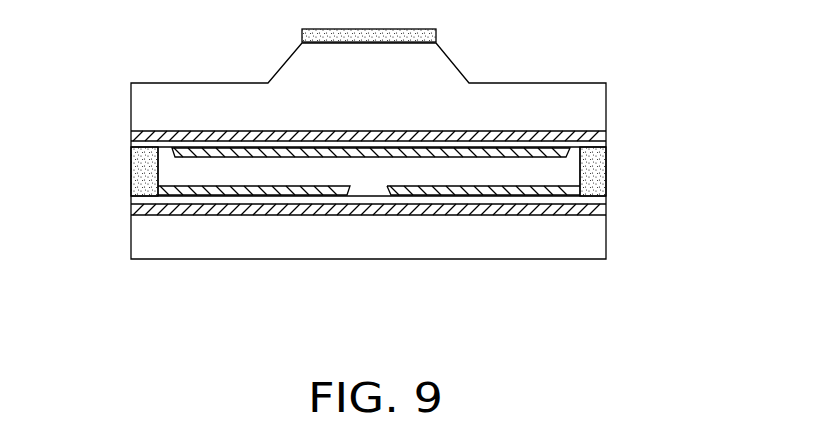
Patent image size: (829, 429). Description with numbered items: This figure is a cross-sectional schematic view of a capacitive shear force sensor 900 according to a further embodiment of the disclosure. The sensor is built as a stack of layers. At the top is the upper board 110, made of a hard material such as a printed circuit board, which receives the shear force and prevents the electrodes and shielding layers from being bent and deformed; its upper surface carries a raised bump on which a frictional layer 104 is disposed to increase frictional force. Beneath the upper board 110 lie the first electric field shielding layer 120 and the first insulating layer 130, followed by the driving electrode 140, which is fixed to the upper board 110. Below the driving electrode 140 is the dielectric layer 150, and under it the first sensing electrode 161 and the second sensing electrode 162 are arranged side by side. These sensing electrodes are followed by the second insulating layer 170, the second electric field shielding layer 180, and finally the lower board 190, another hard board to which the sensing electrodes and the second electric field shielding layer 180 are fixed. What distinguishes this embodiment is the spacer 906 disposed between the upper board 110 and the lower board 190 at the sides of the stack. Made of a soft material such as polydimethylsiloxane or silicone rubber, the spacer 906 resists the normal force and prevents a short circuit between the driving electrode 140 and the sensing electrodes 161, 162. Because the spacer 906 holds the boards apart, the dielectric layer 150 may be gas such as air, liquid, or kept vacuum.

The frictional layer 104 is at (437, 36).
The upper board 110 is at (598, 95).
The first electric field shielding layer 120 is at (598, 135).
The first insulating layer 130 is at (598, 144).
The driving electrode 140 is at (338, 157).
The dielectric layer 150 is at (175, 165).
The first sensing electrode 161 is at (235, 187).
The second sensing electrode 162 is at (463, 190).
The second insulating layer 170 is at (600, 199).
The second electric field shielding layer 180 is at (600, 210).
The lower board 190 is at (600, 240).
The capacitive shear force sensor 900 is at (367, 178).
The spacer 906 is at (598, 172).